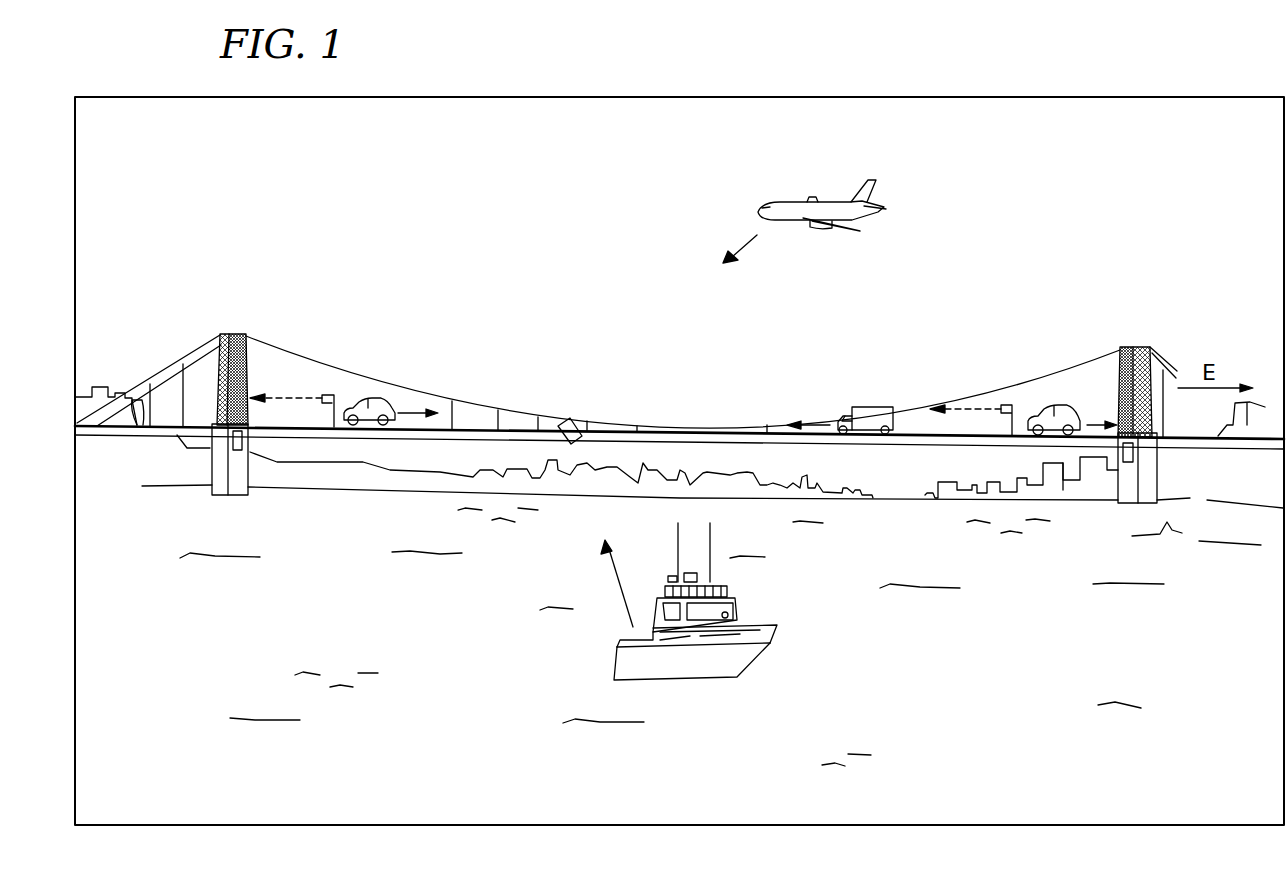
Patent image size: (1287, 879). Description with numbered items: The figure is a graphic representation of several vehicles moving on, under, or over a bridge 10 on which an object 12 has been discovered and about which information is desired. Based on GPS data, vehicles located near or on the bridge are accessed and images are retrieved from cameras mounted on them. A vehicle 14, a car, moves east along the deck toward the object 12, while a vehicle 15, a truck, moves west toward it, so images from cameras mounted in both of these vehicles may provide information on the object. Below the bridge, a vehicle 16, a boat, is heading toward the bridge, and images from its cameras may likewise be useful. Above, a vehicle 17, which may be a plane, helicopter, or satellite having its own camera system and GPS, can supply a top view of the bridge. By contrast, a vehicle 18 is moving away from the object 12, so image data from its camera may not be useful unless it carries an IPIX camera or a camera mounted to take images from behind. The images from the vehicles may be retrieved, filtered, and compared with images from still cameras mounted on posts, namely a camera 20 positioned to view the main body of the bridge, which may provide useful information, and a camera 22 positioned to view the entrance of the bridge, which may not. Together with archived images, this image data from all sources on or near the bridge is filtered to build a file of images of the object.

The bridge 10 is at (1152, 324).
The object 12 is at (570, 420).
The vehicle 14 is at (373, 397).
The vehicle 15 is at (868, 407).
The vehicle 16 is at (772, 653).
The vehicle 17 is at (874, 185).
The vehicle 18 is at (1057, 408).
The camera 20 is at (1009, 405).
The camera 22 is at (328, 392).